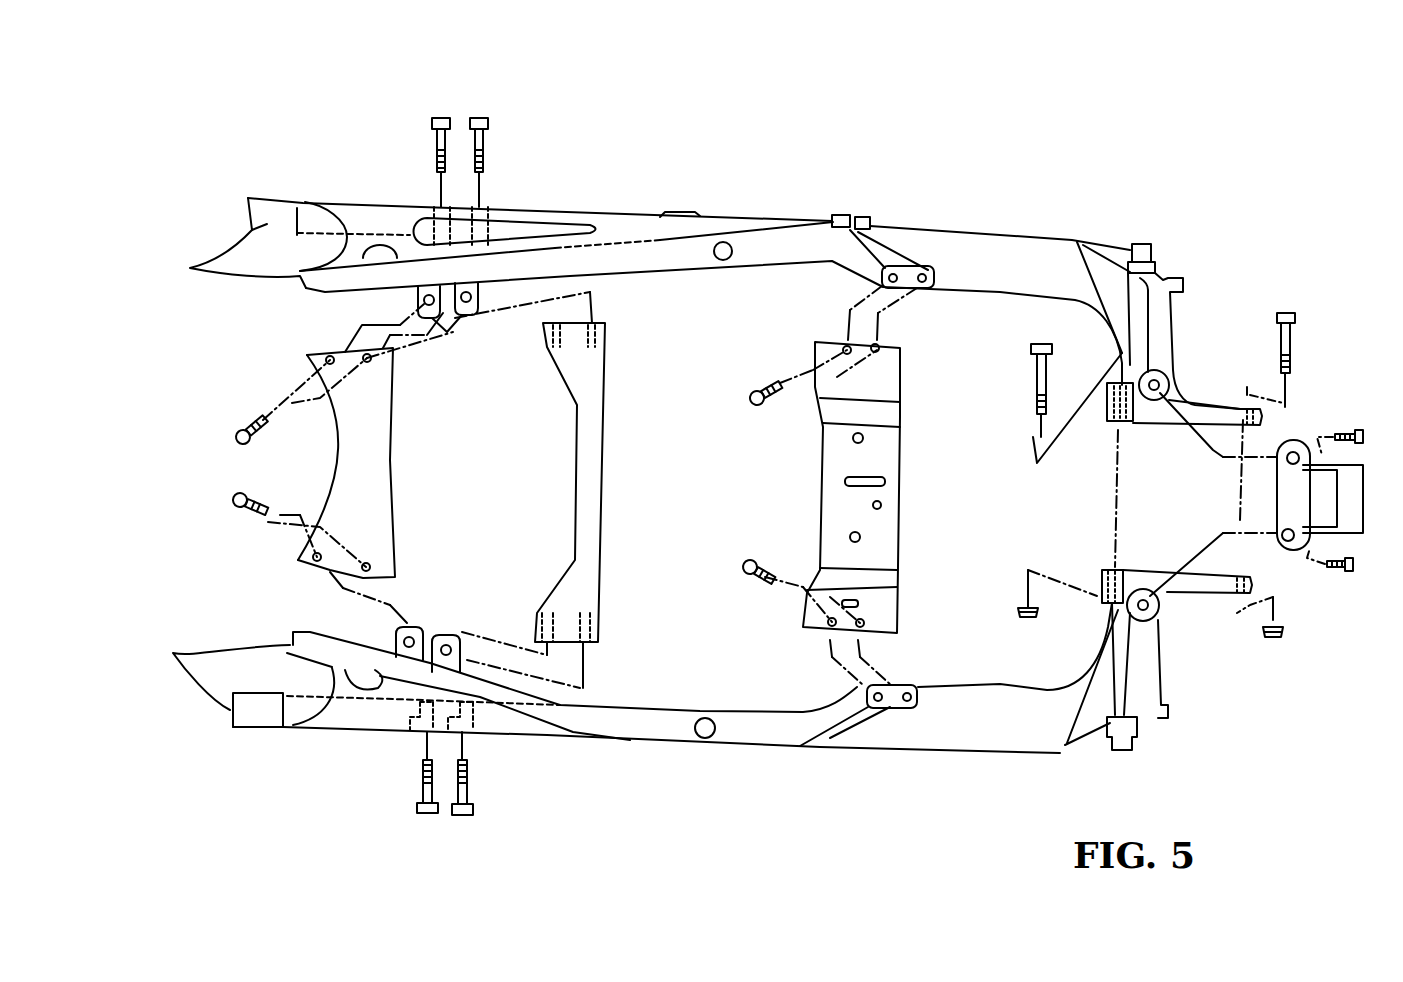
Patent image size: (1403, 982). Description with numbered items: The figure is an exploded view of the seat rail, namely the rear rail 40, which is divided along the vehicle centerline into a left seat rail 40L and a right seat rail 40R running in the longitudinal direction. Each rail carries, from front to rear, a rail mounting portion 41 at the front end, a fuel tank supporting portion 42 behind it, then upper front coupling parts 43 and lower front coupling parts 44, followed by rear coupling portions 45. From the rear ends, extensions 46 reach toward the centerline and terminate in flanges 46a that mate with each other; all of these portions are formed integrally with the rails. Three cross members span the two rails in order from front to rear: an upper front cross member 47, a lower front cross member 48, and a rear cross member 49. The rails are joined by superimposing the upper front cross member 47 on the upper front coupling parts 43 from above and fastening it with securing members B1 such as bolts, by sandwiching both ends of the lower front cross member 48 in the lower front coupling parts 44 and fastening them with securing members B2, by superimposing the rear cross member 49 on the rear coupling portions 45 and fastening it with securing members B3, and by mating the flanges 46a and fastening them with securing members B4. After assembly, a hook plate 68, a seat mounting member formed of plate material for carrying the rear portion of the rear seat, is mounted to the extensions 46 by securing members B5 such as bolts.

The rear rail 40 is at (200, 128).
The right seat rail 40R is at (766, 194).
The left seat rail 40L is at (737, 777).
The rail mounting portion 41 is at (192, 268).
The fuel tank supporting portion 42 is at (367, 243).
The upper front coupling part 43 is at (463, 318).
The lower front coupling part 44 is at (487, 205).
The rear coupling portion 45 is at (907, 273).
The extension 46 is at (1167, 317).
The flange 46a is at (1250, 406).
The upper front cross member 47 is at (367, 475).
The lower front cross member 48 is at (593, 487).
The rear cross member 49 is at (888, 497).
The hook plate 68 is at (1305, 558).
The securing member B1 is at (233, 500).
The securing member B2 is at (480, 118).
The securing member B3 is at (758, 404).
The securing member B4 is at (1033, 390).
The securing member B5 is at (1343, 430).